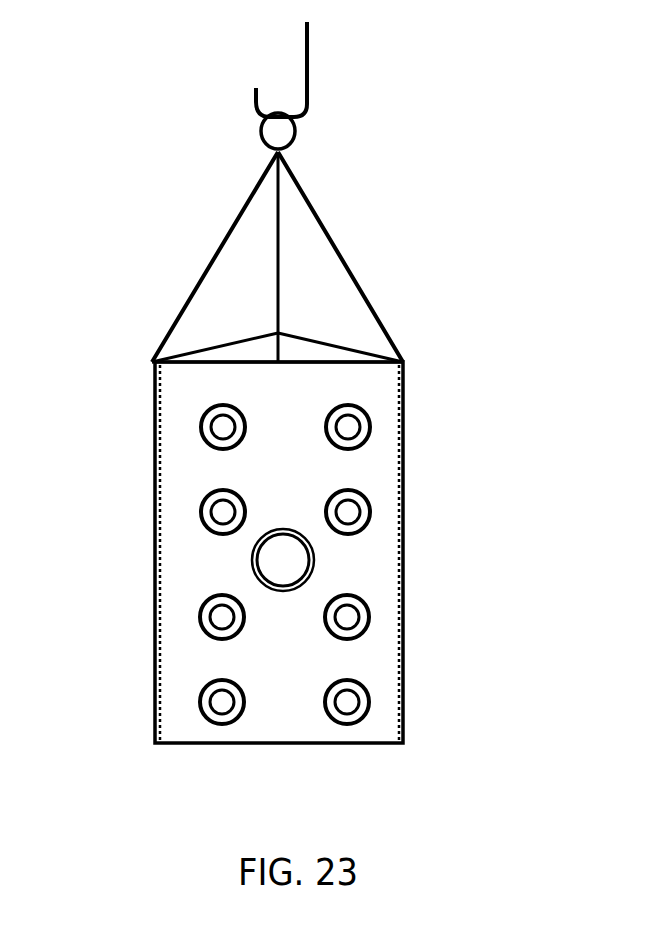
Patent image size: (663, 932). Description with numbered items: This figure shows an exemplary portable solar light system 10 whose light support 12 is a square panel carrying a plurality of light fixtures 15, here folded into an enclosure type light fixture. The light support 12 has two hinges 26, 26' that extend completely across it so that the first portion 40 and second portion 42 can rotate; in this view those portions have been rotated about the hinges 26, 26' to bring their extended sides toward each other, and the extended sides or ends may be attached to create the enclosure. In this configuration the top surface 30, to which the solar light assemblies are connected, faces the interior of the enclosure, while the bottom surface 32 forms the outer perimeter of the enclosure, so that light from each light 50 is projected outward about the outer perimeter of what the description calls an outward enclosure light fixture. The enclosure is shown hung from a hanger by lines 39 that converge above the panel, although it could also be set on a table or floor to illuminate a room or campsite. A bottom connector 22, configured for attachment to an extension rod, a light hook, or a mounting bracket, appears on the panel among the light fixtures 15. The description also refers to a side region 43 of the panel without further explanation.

The portable solar light system 10 is at (135, 332).
The light support 12 is at (387, 673).
The light fixtures 15 is at (371, 427).
The bottom connector 22 is at (300, 560).
The hinge 26 is at (108, 544).
The hinge 26' is at (453, 532).
The top surface 30 is at (308, 357).
The bottom surface 32 is at (380, 393).
The lines 39 is at (362, 290).
The first portion 40 is at (260, 357).
The second portion 42 is at (340, 358).
The side panel 43 is at (185, 467).
The light 50 is at (350, 514).